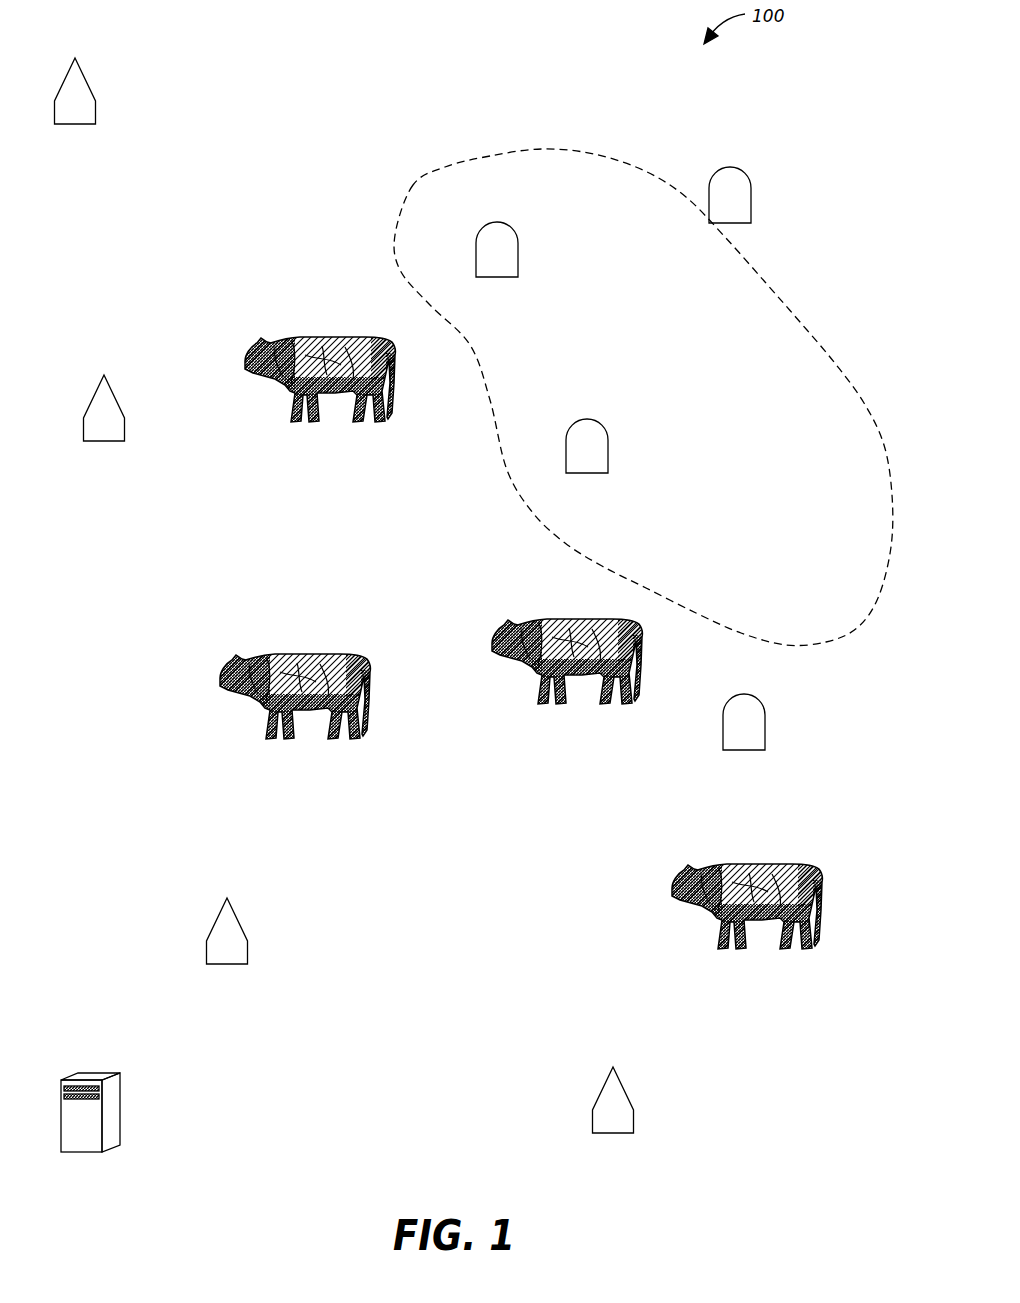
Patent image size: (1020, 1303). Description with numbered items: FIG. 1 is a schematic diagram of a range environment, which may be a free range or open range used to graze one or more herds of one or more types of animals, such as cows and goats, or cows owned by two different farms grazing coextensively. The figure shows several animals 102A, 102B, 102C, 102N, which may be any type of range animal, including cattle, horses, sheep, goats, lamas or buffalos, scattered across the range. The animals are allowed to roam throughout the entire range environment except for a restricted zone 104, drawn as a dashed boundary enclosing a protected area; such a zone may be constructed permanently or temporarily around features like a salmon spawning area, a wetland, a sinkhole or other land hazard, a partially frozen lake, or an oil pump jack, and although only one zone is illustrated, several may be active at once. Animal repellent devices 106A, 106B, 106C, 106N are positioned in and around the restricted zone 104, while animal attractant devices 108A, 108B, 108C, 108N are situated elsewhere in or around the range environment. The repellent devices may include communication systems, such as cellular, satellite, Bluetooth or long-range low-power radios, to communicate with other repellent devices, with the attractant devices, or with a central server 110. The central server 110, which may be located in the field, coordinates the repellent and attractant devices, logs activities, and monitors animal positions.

The animal 102A is at (303, 338).
The animal 102B is at (279, 654).
The animal 102C is at (561, 619).
The animal 102N is at (743, 864).
The restricted zone 104 is at (777, 312).
The animal repellent device 106A is at (512, 230).
The animal repellent device 106B is at (746, 178).
The animal repellent device 106C is at (602, 427).
The animal repellent device 106N is at (760, 702).
The animal attractant device 108A is at (84, 72).
The animal attractant device 108B is at (113, 388).
The animal attractant device 108C is at (236, 916).
The animal attractant device 108N is at (623, 1082).
The central server 110 is at (104, 1078).